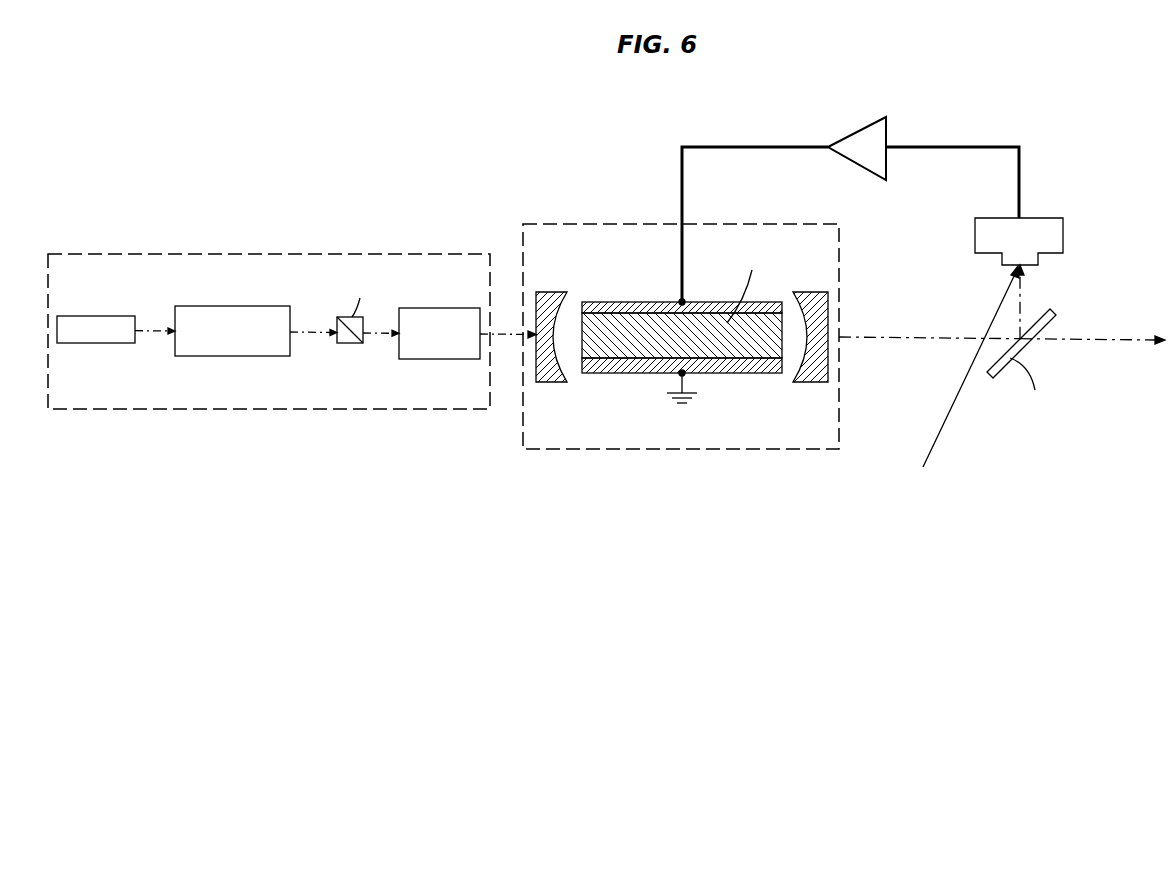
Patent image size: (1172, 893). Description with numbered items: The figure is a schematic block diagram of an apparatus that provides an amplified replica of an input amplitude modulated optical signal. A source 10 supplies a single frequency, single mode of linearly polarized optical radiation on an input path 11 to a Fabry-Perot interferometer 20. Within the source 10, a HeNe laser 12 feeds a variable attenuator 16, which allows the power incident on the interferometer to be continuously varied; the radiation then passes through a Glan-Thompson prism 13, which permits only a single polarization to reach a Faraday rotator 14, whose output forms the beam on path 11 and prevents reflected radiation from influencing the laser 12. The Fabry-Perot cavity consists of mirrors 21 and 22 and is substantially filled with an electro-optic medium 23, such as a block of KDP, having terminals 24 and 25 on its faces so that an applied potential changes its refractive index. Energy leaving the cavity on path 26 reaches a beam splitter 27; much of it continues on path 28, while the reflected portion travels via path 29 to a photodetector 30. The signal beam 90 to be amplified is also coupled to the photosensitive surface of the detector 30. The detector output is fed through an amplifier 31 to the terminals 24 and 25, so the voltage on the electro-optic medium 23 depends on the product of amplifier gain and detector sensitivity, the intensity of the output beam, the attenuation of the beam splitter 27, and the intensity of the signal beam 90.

The source 10 is at (373, 228).
The path 11 is at (513, 336).
The laser 12 is at (92, 343).
The Glan-Thompson prism 13 is at (353, 343).
The Faraday rotator 14 is at (438, 359).
The variable attenuator 16 is at (260, 356).
The Fabry-Perot interferometer 20 is at (523, 422).
The mirror 21 is at (552, 383).
The mirror 22 is at (807, 383).
The electro-optic medium 23 is at (750, 353).
The terminal 24 is at (630, 302).
The terminal 25 is at (622, 367).
The path 26 is at (903, 342).
The beam splitter 27 is at (1076, 371).
The path 28 is at (1117, 347).
The path 29 is at (1023, 289).
The photodetector 30 is at (1063, 247).
The amplifier 31 is at (887, 130).
The signal beam 90 is at (935, 442).